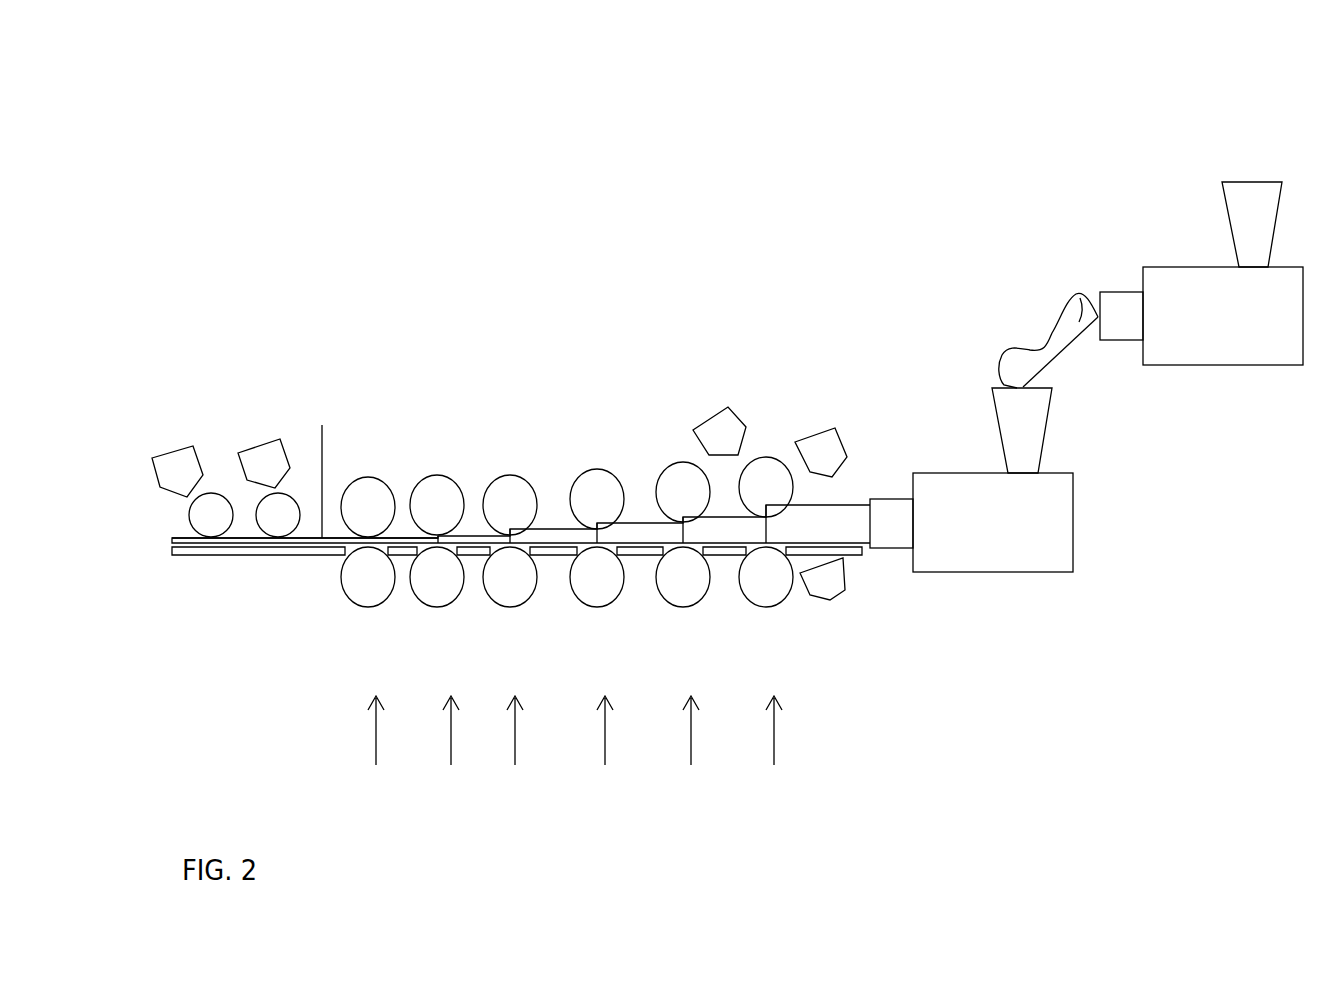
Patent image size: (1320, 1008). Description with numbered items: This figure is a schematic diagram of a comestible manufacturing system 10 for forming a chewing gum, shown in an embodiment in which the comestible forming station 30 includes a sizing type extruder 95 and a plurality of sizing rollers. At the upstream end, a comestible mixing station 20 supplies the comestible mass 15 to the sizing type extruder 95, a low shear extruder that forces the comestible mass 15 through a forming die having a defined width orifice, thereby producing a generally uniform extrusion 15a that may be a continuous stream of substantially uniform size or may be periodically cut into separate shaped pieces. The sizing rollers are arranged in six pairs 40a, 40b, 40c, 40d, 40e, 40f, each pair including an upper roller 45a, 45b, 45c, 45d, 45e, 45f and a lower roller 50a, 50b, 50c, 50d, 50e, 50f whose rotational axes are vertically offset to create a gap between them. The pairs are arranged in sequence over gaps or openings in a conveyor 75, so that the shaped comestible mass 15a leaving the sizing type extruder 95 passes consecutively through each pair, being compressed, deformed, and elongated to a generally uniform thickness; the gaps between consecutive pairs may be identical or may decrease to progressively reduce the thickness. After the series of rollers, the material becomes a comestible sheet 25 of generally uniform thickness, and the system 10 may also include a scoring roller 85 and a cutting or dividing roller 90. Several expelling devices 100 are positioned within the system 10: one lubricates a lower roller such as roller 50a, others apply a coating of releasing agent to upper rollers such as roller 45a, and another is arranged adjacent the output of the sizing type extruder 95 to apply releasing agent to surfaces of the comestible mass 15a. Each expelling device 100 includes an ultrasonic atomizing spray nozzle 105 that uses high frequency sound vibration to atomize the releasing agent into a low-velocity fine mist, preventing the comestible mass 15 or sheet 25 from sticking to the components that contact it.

The comestible manufacturing system 10 is at (317, 125).
The comestible mixing station 20 is at (1173, 223).
The comestible mass 15 is at (1085, 296).
The sizing type extruder 95 is at (990, 535).
The extrusion 15a is at (839, 505).
The comestible sheet 25 is at (322, 425).
The comestible forming station 30 is at (718, 328).
The conveyor 75 is at (312, 556).
The scoring roller 85 is at (275, 518).
The cutting roller 90 is at (200, 513).
The expelling device 100 is at (181, 455).
The ultrasonic atomizing spray nozzle 105 is at (720, 430).
The upper roller 45a is at (771, 472).
The upper roller 45b is at (678, 483).
The upper roller 45c is at (590, 493).
The upper roller 45d is at (510, 498).
The upper roller 45e is at (442, 493).
The upper roller 45f is at (372, 510).
The lower roller 50a is at (773, 592).
The lower roller 50b is at (683, 588).
The lower roller 50c is at (592, 593).
The lower roller 50d is at (507, 588).
The lower roller 50e is at (438, 590).
The lower roller 50f is at (362, 590).
The pair of sizing rollers 40a is at (770, 745).
The pair of sizing rollers 40b is at (695, 745).
The pair of sizing rollers 40c is at (602, 743).
The pair of sizing rollers 40d is at (516, 744).
The pair of sizing rollers 40e is at (450, 745).
The pair of sizing rollers 40f is at (375, 742).